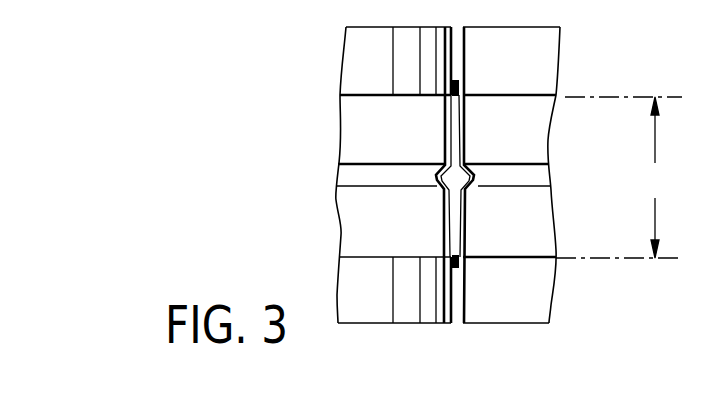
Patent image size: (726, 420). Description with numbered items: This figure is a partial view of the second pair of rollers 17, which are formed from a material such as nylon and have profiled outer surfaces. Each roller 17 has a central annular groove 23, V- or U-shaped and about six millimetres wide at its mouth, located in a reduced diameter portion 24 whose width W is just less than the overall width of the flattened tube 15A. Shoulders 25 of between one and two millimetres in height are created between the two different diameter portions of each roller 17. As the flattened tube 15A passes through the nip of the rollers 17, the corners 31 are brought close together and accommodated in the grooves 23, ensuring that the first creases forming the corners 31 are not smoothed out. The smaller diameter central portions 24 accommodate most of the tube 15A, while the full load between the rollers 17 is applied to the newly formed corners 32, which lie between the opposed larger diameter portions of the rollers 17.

The second pair of rollers 17 is at (351, 64).
The shoulders 25 is at (358, 97).
The central annular groove 23 is at (342, 170).
The reduced diameter portion 24 is at (402, 144).
The corners 31 is at (442, 187).
The newly formed corners 32 is at (460, 87).
The flattened tube 15A is at (469, 230).
The width of reduced diameter portion W is at (619, 177).